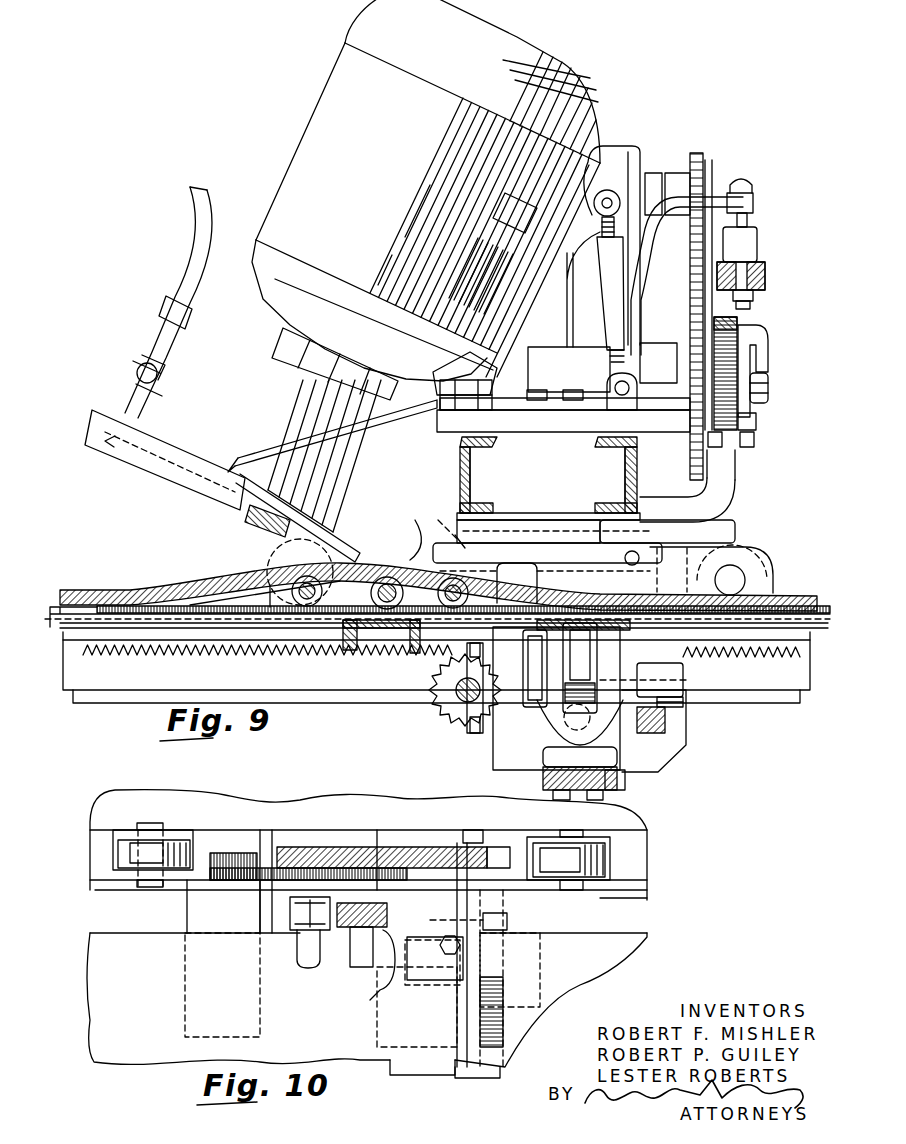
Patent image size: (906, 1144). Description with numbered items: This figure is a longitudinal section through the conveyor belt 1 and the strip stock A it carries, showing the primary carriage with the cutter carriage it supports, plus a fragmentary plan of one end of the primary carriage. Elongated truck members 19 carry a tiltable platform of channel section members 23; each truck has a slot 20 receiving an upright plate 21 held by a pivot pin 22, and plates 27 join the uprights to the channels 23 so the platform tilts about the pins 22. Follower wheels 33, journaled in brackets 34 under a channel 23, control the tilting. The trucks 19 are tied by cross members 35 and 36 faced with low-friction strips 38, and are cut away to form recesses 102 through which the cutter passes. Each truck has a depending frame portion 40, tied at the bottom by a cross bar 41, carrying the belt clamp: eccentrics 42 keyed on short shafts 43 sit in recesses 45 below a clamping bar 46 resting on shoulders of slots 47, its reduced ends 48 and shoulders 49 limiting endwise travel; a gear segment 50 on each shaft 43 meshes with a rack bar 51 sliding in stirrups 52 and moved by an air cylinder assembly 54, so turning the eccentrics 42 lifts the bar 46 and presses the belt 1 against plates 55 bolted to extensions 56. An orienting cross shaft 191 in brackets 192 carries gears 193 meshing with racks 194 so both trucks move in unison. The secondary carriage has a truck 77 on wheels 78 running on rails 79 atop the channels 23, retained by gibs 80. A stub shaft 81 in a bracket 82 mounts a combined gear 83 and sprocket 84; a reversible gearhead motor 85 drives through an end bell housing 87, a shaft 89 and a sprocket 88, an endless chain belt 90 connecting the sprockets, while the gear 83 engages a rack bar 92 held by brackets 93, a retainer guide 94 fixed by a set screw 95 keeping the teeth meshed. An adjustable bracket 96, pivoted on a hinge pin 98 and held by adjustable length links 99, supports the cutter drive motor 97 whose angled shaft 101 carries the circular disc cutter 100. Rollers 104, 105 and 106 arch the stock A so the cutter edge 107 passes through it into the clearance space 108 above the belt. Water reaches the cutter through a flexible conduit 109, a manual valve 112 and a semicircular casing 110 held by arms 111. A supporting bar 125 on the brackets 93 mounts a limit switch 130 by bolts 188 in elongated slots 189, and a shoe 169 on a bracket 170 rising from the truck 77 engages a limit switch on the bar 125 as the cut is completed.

In FIG. 9, the conveyor belt 1 is at (183, 606).
In FIG. 10, the conveyor belt 1 is at (125, 935).
In FIG. 9, the truck members 19 is at (768, 565).
In FIG. 10, the truck members 19 is at (178, 832).
In FIG. 10, the longitudinal slot 20 is at (290, 850).
In FIG. 9, the upright plate 21 is at (700, 538).
In FIG. 10, the upright plate 21 is at (410, 830).
In FIG. 9, the pivot pin 22 is at (638, 563).
In FIG. 10, the pivot pin 22 is at (485, 835).
In FIG. 9, the channel section members 23 is at (460, 488).
In FIG. 9, the plates 27 is at (560, 512).
In FIG. 9, the follower wheels 33 is at (510, 520).
In FIG. 10, the follower wheels 33 is at (118, 852).
In FIG. 9, the brackets 34 is at (440, 525).
In FIG. 9, the cross member 35 is at (348, 650).
In FIG. 10, the cross member 35 is at (185, 1010).
In FIG. 9, the cross member 36 is at (750, 655).
In FIG. 10, the cross member 36 is at (540, 990).
In FIG. 9, the strips 38 is at (302, 650).
In FIG. 9, the depending frame portion 40 is at (627, 713).
In FIG. 10, the depending frame portion 40 is at (305, 950).
In FIG. 9, the cross bar 41 is at (625, 785).
In FIG. 10, the cross bar 41 is at (400, 1068).
In FIG. 9, the eccentrics 42 is at (540, 700).
In FIG. 10, the eccentrics 42 is at (417, 1007).
In FIG. 9, the short shafts 43 is at (683, 677).
In FIG. 9, the recesses 45 is at (600, 740).
In FIG. 9, the clamping bar 46 is at (580, 668).
In FIG. 10, the clamping bar 46 is at (370, 980).
In FIG. 10, the through slots 47 is at (440, 948).
In FIG. 10, the reduced ends 48 is at (377, 840).
In FIG. 10, the shoulders 49 is at (365, 930).
In FIG. 9, the gear segment 50 is at (683, 702).
In FIG. 10, the gear segment 50 is at (507, 922).
In FIG. 9, the rack bar 51 is at (665, 722).
In FIG. 10, the rack bar 51 is at (480, 1072).
In FIG. 9, the stirrups 52 is at (678, 750).
In FIG. 9, the air cylinder assembly 54 is at (545, 775).
In FIG. 9, the plates 55 is at (561, 695).
In FIG. 10, the plates 55 is at (462, 965).
In FIG. 10, the extensions 56 is at (432, 975).
In FIG. 9, the truck member 77 is at (532, 435).
In FIG. 9, the wheels 78 is at (548, 480).
In FIG. 9, the rails 79 is at (440, 425).
In FIG. 9, the gib members 80 is at (458, 452).
In FIG. 9, the stub shaft 81 is at (768, 388).
In FIG. 9, the bracket 82 is at (660, 370).
In FIG. 9, the gear 83 is at (754, 440).
In FIG. 9, the sprocket 84 is at (737, 470).
In FIG. 9, the reversible electric motor 85 is at (588, 325).
In FIG. 9, the end bell housing 87 is at (612, 145).
In FIG. 9, the sprocket 88 is at (678, 173).
In FIG. 9, the shaft 89 is at (652, 175).
In FIG. 9, the endless chain belt 90 is at (703, 162).
In FIG. 9, the rack bar 92 is at (737, 330).
In FIG. 9, the brackets 93 is at (735, 500).
In FIG. 9, the retainer guide 94 is at (760, 318).
In FIG. 9, the set screw 95 is at (756, 422).
In FIG. 9, the adjustable bracket 96 is at (510, 250).
In FIG. 9, the cutter drive motor 97 is at (324, 90).
In FIG. 9, the hinge pin 98 is at (478, 368).
In FIG. 9, the adjustable length links 99 is at (515, 213).
In FIG. 9, the circular disc cutter 100 is at (245, 516).
In FIG. 9, the shaft 101 is at (308, 388).
In FIG. 9, the recesses 102 is at (330, 585).
In FIG. 10, the recesses 102 is at (267, 840).
In FIG. 9, the roller 104 is at (290, 567).
In FIG. 9, the roller 105 is at (352, 556).
In FIG. 9, the roller 106 is at (522, 568).
In FIG. 9, the cutter edge 107 is at (420, 645).
In FIG. 9, the clearance space 108 is at (405, 545).
In FIG. 9, the flexible conduit 109 is at (195, 232).
In FIG. 9, the semicircular casing 110 is at (97, 418).
In FIG. 9, the arms 111 is at (255, 460).
In FIG. 9, the manual valve 112 is at (142, 362).
In FIG. 9, the supporting bar 125 is at (765, 276).
In FIG. 9, the limit switch 130 is at (757, 240).
In FIG. 9, the shoe 169 is at (755, 202).
In FIG. 9, the bracket 170 is at (745, 197).
In FIG. 9, the bolts 188 is at (750, 305).
In FIG. 9, the elongated slots 189 is at (753, 294).
In FIG. 9, the cross shaft 191 is at (460, 692).
In FIG. 10, the cross shaft 191 is at (300, 965).
In FIG. 9, the brackets 192 is at (470, 730).
In FIG. 10, the brackets 192 is at (262, 935).
In FIG. 9, the gears 193 is at (445, 705).
In FIG. 10, the gears 193 is at (240, 882).
In FIG. 9, the racks 194 is at (118, 650).
In FIG. 10, the racks 194 is at (228, 855).
In FIG. 9, the strip stock A is at (137, 590).